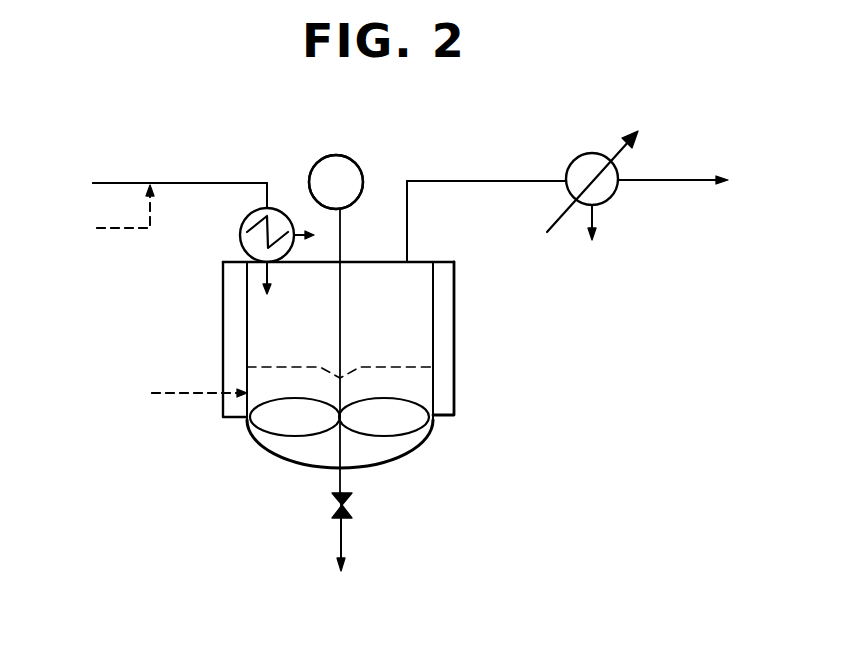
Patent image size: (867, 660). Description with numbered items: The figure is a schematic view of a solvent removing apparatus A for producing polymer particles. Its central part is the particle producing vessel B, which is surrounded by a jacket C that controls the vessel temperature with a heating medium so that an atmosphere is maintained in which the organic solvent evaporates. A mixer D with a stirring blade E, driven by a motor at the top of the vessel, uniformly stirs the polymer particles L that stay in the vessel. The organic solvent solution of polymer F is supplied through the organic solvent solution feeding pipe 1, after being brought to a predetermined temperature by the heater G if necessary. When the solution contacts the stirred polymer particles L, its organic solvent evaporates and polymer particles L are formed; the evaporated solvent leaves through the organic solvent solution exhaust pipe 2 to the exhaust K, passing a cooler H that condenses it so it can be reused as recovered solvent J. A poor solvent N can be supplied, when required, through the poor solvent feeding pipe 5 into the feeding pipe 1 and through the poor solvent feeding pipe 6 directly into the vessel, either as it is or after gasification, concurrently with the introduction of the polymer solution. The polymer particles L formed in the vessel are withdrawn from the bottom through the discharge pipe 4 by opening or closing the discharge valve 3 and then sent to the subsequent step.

The solvent removing apparatus A is at (336, 305).
The particle producing vessel B is at (384, 258).
The jacket C is at (455, 338).
The mixer D is at (361, 168).
The stirring blade E is at (432, 425).
The organic solvent solution of polymer F is at (164, 187).
The heater G is at (240, 235).
The cooler H is at (592, 176).
The recovered solvent J is at (588, 239).
The exhaust K is at (685, 180).
The polymer particles L is at (339, 565).
The poor solvent N is at (158, 297).
The organic solvent solution feeding pipe 1 is at (205, 183).
The organic solvent solution exhaust pipe 2 is at (490, 180).
The discharge valve 3 is at (353, 500).
The discharge pipe 4 is at (342, 540).
The poor solvent feeding pipe 5 is at (120, 230).
The poor solvent feeding pipe 6 is at (183, 396).